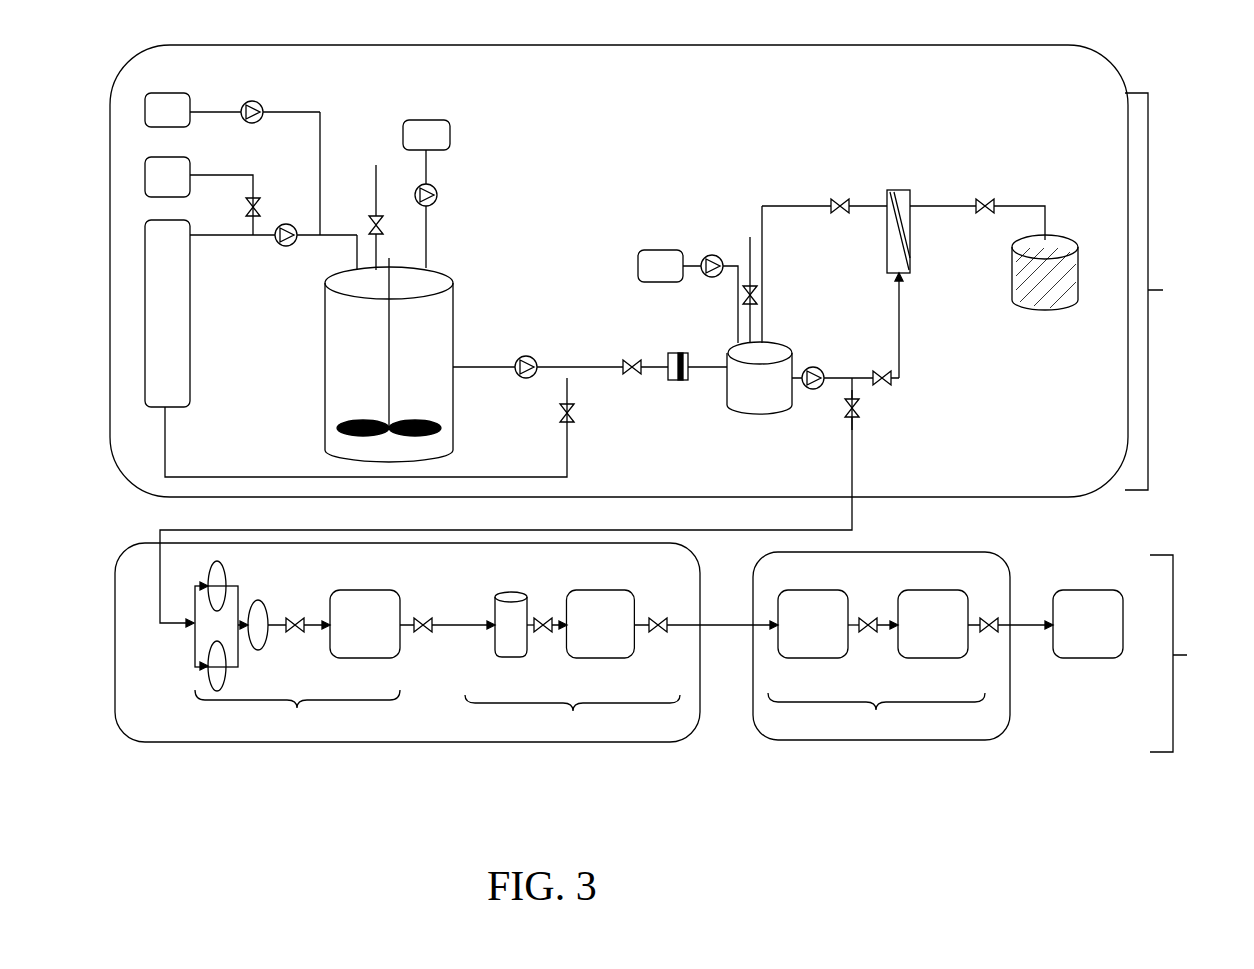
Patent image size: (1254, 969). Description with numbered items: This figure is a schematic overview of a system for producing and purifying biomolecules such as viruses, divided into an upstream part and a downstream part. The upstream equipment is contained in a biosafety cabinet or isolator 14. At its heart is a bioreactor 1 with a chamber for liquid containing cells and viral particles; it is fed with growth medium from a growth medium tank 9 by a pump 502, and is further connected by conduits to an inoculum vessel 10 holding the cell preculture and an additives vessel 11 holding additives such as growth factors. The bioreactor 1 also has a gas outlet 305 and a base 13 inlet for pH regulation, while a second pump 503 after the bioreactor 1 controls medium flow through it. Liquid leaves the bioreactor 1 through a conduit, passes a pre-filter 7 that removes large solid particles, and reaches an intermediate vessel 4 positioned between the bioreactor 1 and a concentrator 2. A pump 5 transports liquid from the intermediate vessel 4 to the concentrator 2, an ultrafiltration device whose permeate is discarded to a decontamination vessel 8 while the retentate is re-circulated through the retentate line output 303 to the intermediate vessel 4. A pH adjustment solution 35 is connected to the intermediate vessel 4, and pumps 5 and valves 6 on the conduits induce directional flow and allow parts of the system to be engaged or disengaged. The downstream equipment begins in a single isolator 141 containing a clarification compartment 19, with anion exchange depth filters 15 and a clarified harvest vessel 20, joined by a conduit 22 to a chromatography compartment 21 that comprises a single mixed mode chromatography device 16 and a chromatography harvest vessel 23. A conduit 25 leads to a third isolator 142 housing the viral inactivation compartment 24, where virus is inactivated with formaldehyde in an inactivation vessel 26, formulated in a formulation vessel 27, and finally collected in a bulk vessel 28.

The bioreactor 1 is at (446, 318).
The concentrator 2 is at (898, 190).
The intermediate vessel 4 is at (740, 412).
The pump 5 is at (258, 102).
The valve 6 is at (258, 205).
The pre-filter 7 is at (674, 384).
The decontamination vessel 8 is at (1078, 256).
The growth medium tank 9 is at (178, 338).
The inoculum vessel 10 is at (176, 176).
The additives vessel 11 is at (160, 106).
The base inlet 13 is at (425, 134).
The biosafety cabinet or isolator 14 is at (1112, 74).
The anion exchange depth filters 15 is at (240, 626).
The mixed mode chromatography device 16 is at (513, 648).
The clarification compartment 19 is at (297, 709).
The clarified harvest vessel 20 is at (360, 652).
The chromatography compartment 21 is at (572, 713).
The conduit 22 is at (448, 622).
The chromatography harvest vessel 23 is at (590, 648).
The viral inactivation compartment 24 is at (876, 712).
The conduit 25 is at (714, 623).
The inactivation vessel 26 is at (820, 648).
The formulation vessel 27 is at (928, 648).
The bulk vessel 28 is at (1082, 648).
The pH adjustment solution 35 is at (655, 262).
The biosafety cabinet or isolator 141 is at (143, 543).
The third isolator 142 is at (1010, 553).
The retentate line output 303 is at (770, 206).
The gas outlet 305 is at (376, 178).
The pump 502 is at (282, 248).
The pump 503 is at (528, 355).